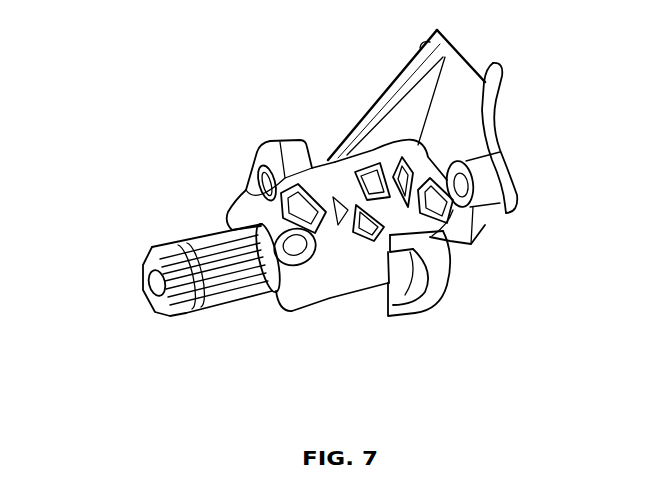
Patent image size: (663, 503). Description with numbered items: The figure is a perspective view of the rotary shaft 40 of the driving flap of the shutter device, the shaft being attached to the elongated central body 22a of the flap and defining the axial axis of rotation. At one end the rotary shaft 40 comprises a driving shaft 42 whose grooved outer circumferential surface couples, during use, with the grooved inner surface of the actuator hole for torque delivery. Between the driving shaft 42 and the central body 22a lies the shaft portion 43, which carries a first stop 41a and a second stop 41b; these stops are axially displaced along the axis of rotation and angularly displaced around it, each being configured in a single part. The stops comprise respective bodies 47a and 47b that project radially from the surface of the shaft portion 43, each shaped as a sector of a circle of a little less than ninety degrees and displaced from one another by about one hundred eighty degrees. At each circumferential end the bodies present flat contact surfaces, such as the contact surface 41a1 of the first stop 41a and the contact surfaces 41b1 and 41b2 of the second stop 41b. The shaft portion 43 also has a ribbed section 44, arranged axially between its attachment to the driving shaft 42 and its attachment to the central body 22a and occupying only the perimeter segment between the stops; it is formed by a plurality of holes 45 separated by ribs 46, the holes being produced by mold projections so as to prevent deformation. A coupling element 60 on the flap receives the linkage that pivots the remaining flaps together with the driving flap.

The rotary shaft 40 is at (133, 90).
The first stop 41a is at (235, 172).
The contact surface 41a1 is at (287, 143).
The second stop 41b is at (437, 318).
The contact surface 41b1 is at (472, 247).
The contact surface 41b2 is at (390, 268).
The driving shaft 42 is at (145, 252).
The shaft portion 43 is at (283, 330).
The ribbed section 44 is at (350, 155).
The holes 45 is at (472, 212).
The ribs 46 is at (343, 227).
The body 47a is at (260, 150).
The body 47b is at (440, 287).
The central body 22a is at (467, 118).
The coupling element 60 is at (473, 182).